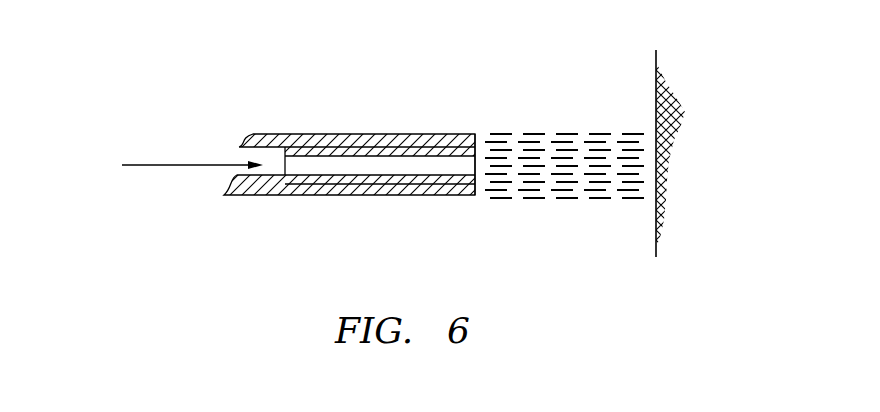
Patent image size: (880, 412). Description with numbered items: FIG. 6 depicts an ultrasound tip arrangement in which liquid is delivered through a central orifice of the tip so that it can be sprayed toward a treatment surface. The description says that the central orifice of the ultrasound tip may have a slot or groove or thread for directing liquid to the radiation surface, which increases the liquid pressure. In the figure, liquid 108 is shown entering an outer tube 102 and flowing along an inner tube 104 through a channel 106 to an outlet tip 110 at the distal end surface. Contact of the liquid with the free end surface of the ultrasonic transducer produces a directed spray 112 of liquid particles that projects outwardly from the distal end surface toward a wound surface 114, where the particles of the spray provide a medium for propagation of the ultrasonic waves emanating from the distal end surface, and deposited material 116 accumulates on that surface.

The outer tube 102 is at (257, 188).
The inner tube 104 is at (420, 183).
The liquid channel / bore 106 is at (348, 165).
The liquid flow 108 is at (171, 165).
The nozzle tip / outlet 110 is at (476, 187).
The spray 112 is at (541, 138).
The target wall / substrate 114 is at (655, 82).
The deposited material 116 is at (670, 112).